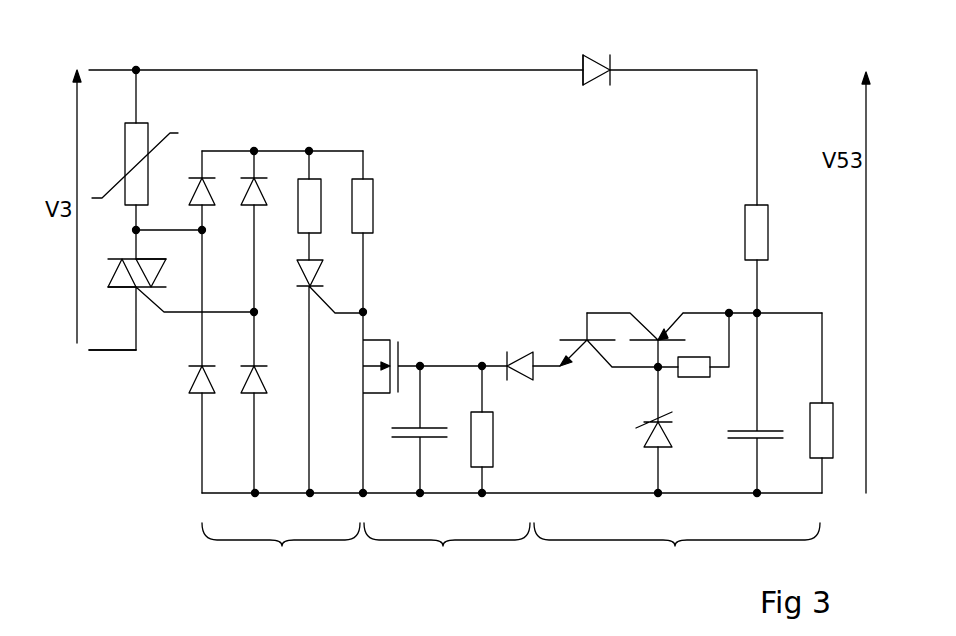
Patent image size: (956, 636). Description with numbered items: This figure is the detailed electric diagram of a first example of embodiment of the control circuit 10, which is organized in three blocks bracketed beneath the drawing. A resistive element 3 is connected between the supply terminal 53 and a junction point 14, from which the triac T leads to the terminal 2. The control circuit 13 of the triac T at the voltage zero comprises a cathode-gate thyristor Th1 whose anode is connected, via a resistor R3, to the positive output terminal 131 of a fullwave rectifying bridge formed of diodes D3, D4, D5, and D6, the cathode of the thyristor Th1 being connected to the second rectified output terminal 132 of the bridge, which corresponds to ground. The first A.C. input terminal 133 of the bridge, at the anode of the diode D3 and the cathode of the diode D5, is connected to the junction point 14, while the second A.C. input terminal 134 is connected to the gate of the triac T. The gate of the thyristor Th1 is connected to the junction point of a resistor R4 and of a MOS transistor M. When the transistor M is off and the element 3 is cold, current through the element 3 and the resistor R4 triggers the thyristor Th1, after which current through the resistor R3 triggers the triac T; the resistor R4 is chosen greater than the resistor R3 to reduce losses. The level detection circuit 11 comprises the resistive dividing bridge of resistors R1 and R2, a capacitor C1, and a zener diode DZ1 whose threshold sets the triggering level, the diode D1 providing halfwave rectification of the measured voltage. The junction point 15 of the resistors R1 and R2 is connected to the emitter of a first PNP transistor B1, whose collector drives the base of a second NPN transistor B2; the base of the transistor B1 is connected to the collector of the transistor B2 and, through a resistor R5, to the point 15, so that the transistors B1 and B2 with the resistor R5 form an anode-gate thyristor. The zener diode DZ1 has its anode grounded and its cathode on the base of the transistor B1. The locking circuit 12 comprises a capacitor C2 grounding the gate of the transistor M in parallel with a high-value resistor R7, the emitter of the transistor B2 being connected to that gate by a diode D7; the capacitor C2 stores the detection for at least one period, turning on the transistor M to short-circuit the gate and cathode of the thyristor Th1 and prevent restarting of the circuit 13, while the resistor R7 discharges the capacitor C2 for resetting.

The terminal 53 is at (105, 70).
The resistive element 3 is at (125, 152).
The junction point 14 is at (133, 230).
The terminal 2 is at (103, 350).
The positive output terminal 131 is at (282, 138).
The second rectified output terminal 132 is at (256, 491).
The first A.C. input terminal 133 is at (204, 232).
The second A.C. input terminal 134 is at (256, 314).
The control circuit 10 is at (534, 221).
The junction point 15 is at (757, 313).
The control circuit 13 is at (281, 549).
The locking circuit 12 is at (447, 549).
The level detection circuit 11 is at (677, 549).
The triac T is at (170, 304).
The diode D1 is at (597, 59).
The diode D3 is at (188, 258).
The diode D4 is at (240, 258).
The diode D5 is at (184, 429).
The diode D6 is at (271, 429).
The diode D7 is at (531, 354).
The resistor R1 is at (774, 232).
The resistor R2 is at (810, 403).
The resistor R3 is at (324, 205).
The resistor R4 is at (378, 231).
The resistor R5 is at (695, 359).
The resistor R7 is at (499, 428).
The cathode-gate thyristor Th1 is at (330, 376).
The MOS transistor M is at (426, 402).
The capacitor C1 is at (754, 405).
The capacitor C2 is at (412, 428).
The first PNP-type bipolar transistor B1 is at (704, 358).
The second NPN-type bipolar transistor B2 is at (609, 349).
The zener diode DZ1 is at (630, 454).